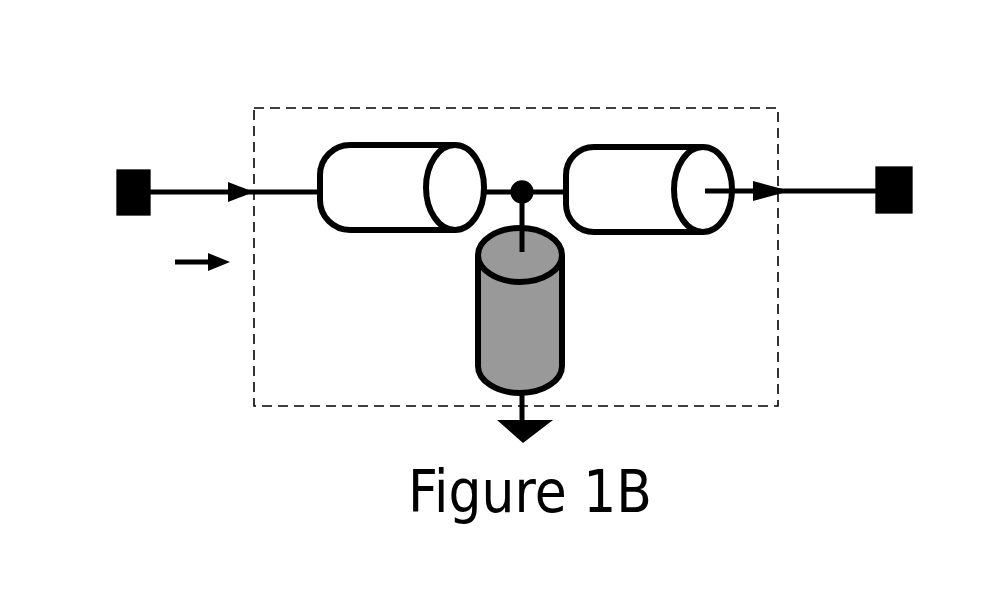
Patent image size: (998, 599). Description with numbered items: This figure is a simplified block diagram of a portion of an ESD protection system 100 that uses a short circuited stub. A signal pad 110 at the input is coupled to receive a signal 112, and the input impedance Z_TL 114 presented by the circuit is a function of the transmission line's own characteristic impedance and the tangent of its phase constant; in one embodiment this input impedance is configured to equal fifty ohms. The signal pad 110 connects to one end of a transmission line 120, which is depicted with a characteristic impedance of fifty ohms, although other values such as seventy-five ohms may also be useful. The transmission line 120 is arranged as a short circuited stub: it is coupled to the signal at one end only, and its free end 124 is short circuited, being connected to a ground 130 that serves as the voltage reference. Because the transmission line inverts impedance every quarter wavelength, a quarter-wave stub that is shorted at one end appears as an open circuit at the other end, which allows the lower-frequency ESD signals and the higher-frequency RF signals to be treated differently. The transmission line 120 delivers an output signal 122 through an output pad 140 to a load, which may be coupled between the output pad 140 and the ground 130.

The ESD protection system 100 is at (252, 62).
The signal pad 110 is at (133, 168).
The signal 112 is at (277, 196).
The input impedance Z_TL 114 is at (157, 278).
The transmission line 120 is at (535, 108).
The output signal 122 is at (748, 196).
The free end 124 is at (563, 330).
The ground 130 is at (552, 422).
The output pad 140 is at (907, 168).